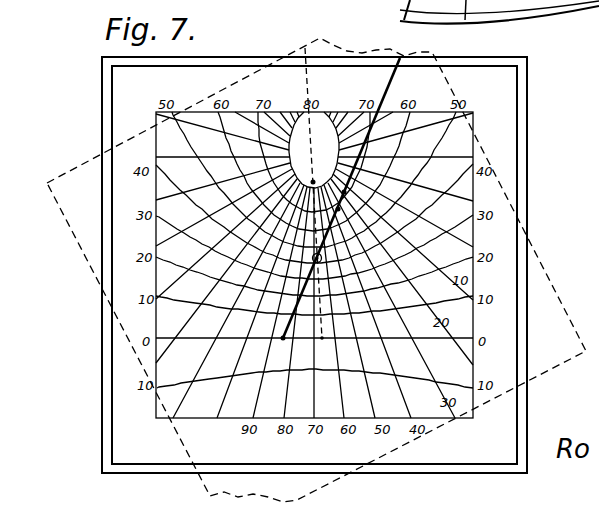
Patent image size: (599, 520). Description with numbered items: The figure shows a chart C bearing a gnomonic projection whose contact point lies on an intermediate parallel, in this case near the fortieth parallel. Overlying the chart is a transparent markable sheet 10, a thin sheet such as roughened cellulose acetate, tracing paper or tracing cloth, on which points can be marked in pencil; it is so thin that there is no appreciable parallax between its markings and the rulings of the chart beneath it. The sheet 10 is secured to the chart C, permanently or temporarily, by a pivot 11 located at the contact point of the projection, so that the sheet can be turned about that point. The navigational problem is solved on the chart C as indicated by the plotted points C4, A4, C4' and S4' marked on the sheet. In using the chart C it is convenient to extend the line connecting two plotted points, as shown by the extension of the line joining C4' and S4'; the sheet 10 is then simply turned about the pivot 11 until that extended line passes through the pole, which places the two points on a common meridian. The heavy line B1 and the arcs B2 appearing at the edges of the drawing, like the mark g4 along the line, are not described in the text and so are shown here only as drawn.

The transparent markable sheet 10 is at (522, 180).
The pivot 11 is at (321, 262).
The chart C is at (536, 110).
The straight edge line B1 is at (341, 185).
The arc member of adjacent figure B2 is at (467, 22).
The plotted point C4 is at (283, 349).
The plotted point C4' is at (321, 204).
The plotted point S4' is at (325, 175).
The plotted point on line B1 g4 is at (357, 194).
The plotted point A4 is at (350, 217).